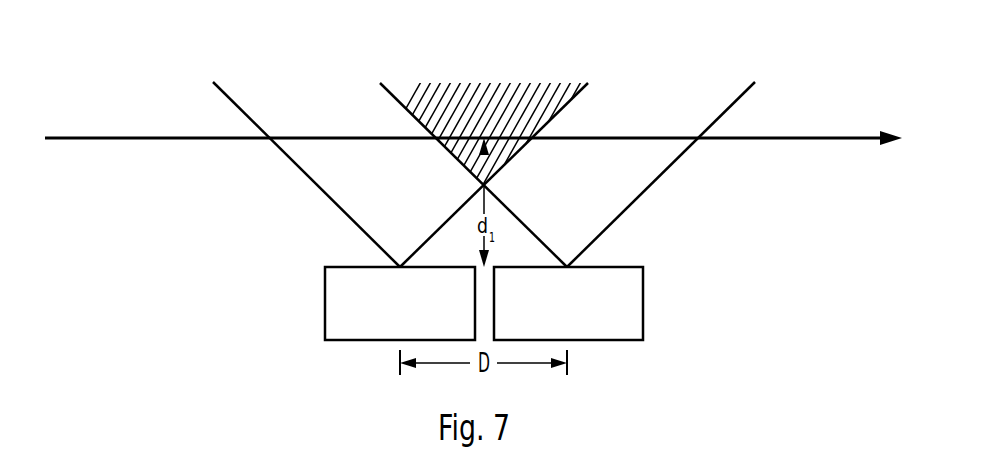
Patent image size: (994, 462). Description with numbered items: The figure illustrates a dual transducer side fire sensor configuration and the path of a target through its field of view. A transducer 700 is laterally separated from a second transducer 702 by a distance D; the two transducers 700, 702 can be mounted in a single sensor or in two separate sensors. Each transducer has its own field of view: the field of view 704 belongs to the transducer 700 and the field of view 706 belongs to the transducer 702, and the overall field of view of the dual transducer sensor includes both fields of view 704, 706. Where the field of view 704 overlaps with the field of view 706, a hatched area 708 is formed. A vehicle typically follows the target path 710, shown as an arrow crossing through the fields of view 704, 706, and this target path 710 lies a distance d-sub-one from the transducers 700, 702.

The transducer 700 is at (325, 302).
The transducer 702 is at (643, 303).
The field of view 704 is at (335, 175).
The field of view 706 is at (628, 168).
The area 708 is at (513, 93).
The target path 710 is at (812, 136).